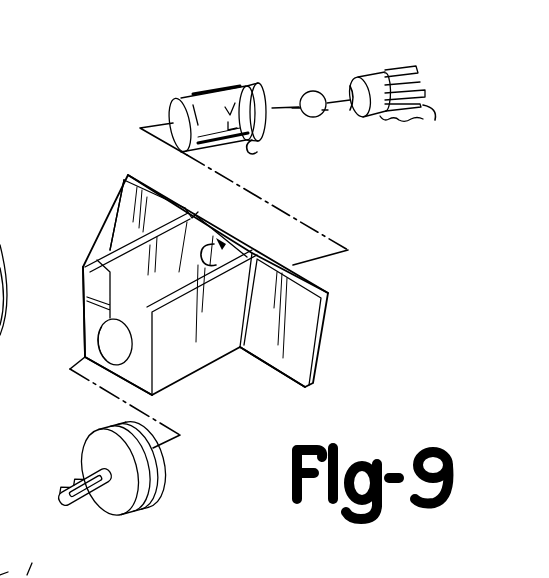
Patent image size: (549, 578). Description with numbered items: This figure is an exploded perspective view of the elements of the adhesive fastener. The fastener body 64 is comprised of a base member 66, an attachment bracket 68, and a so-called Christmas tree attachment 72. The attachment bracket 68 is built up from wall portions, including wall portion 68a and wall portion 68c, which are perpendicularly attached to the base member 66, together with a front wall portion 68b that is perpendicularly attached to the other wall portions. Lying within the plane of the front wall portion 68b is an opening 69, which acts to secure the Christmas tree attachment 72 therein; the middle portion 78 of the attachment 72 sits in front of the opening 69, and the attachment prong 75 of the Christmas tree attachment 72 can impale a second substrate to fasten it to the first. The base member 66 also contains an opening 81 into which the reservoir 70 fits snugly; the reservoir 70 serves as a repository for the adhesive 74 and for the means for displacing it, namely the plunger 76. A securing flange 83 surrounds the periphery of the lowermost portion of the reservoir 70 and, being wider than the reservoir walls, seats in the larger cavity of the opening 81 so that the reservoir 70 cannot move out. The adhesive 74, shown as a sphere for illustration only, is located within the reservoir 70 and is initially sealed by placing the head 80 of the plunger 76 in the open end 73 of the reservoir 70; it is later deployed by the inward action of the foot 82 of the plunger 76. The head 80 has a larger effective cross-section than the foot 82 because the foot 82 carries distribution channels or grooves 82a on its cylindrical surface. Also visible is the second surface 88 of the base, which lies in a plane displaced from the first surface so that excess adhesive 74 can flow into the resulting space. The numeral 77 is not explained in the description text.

The fastener body 64 is at (93, 190).
The base member 66 is at (0, 232).
The attachment bracket 68 is at (186, 358).
The wall portion 68a is at (217, 340).
The front wall portion 68b is at (82, 310).
The wall portion 68c is at (140, 236).
The opening 69 is at (92, 340).
The reservoir 70 is at (212, 93).
The Christmas tree attachment 72 is at (115, 528).
The open end 73 is at (249, 82).
The adhesive 74 is at (312, 92).
The attachment prong 75 is at (79, 484).
The plunger 76 is at (369, 66).
The ring 77 is at (128, 510).
The middle portion 78 is at (157, 472).
The head 80 is at (358, 103).
The opening 81 is at (222, 244).
The foot 82 is at (396, 130).
The distribution channels or grooves 82a is at (424, 129).
The securing flange 83 is at (267, 157).
The second surface 88 is at (35, 555).